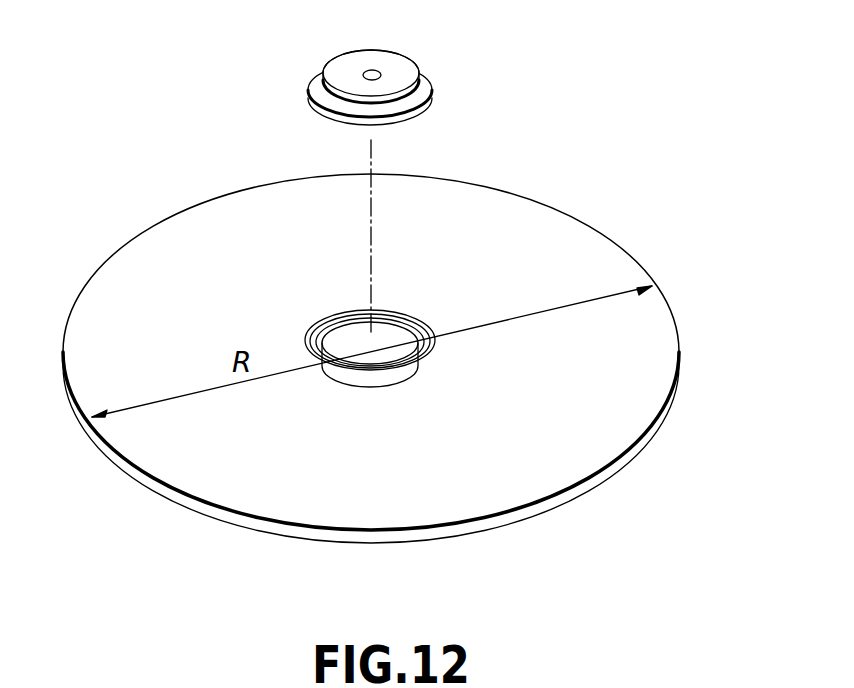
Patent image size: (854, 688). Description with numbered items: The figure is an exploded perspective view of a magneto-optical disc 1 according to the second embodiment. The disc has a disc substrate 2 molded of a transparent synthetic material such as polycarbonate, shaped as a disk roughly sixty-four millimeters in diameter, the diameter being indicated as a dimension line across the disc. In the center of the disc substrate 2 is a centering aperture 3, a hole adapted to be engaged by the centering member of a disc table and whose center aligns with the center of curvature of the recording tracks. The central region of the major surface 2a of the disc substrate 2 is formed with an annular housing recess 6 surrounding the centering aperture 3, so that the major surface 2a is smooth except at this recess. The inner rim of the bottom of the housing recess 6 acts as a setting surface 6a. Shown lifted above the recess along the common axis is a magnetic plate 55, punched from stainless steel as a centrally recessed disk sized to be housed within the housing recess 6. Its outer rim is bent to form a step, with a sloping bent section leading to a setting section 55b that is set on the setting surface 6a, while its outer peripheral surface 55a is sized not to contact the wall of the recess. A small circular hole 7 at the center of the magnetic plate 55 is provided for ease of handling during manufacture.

The magneto-optical disc 1 is at (398, 358).
The disc substrate 2 is at (650, 377).
The major surface 2a is at (130, 272).
The centering aperture 3 is at (387, 348).
The housing recess 6 is at (392, 334).
The setting surface 6a is at (427, 360).
The circular hole 7 is at (367, 68).
The magnetic plate 55 is at (381, 76).
The outer peripheral surface 55a is at (323, 118).
The setting section 55b is at (423, 102).